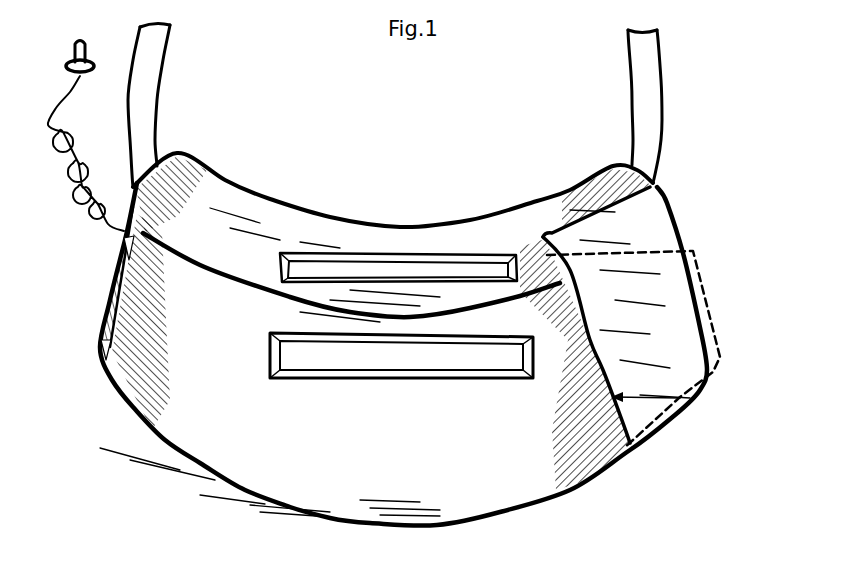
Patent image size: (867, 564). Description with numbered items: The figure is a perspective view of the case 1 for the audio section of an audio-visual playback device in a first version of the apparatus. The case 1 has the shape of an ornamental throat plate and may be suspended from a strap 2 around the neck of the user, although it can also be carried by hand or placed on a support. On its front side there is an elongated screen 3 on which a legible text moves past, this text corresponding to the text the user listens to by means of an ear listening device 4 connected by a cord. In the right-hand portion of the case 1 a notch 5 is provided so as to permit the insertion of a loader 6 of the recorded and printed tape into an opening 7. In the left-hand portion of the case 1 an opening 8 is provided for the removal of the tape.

The case 1 is at (382, 237).
The strap 2 is at (648, 145).
The elongated screen 3 is at (453, 270).
The ear listening device 4 is at (86, 49).
The notch 5 is at (658, 220).
The loader 6 is at (705, 282).
The opening 7 is at (680, 398).
The opening 8 is at (100, 333).